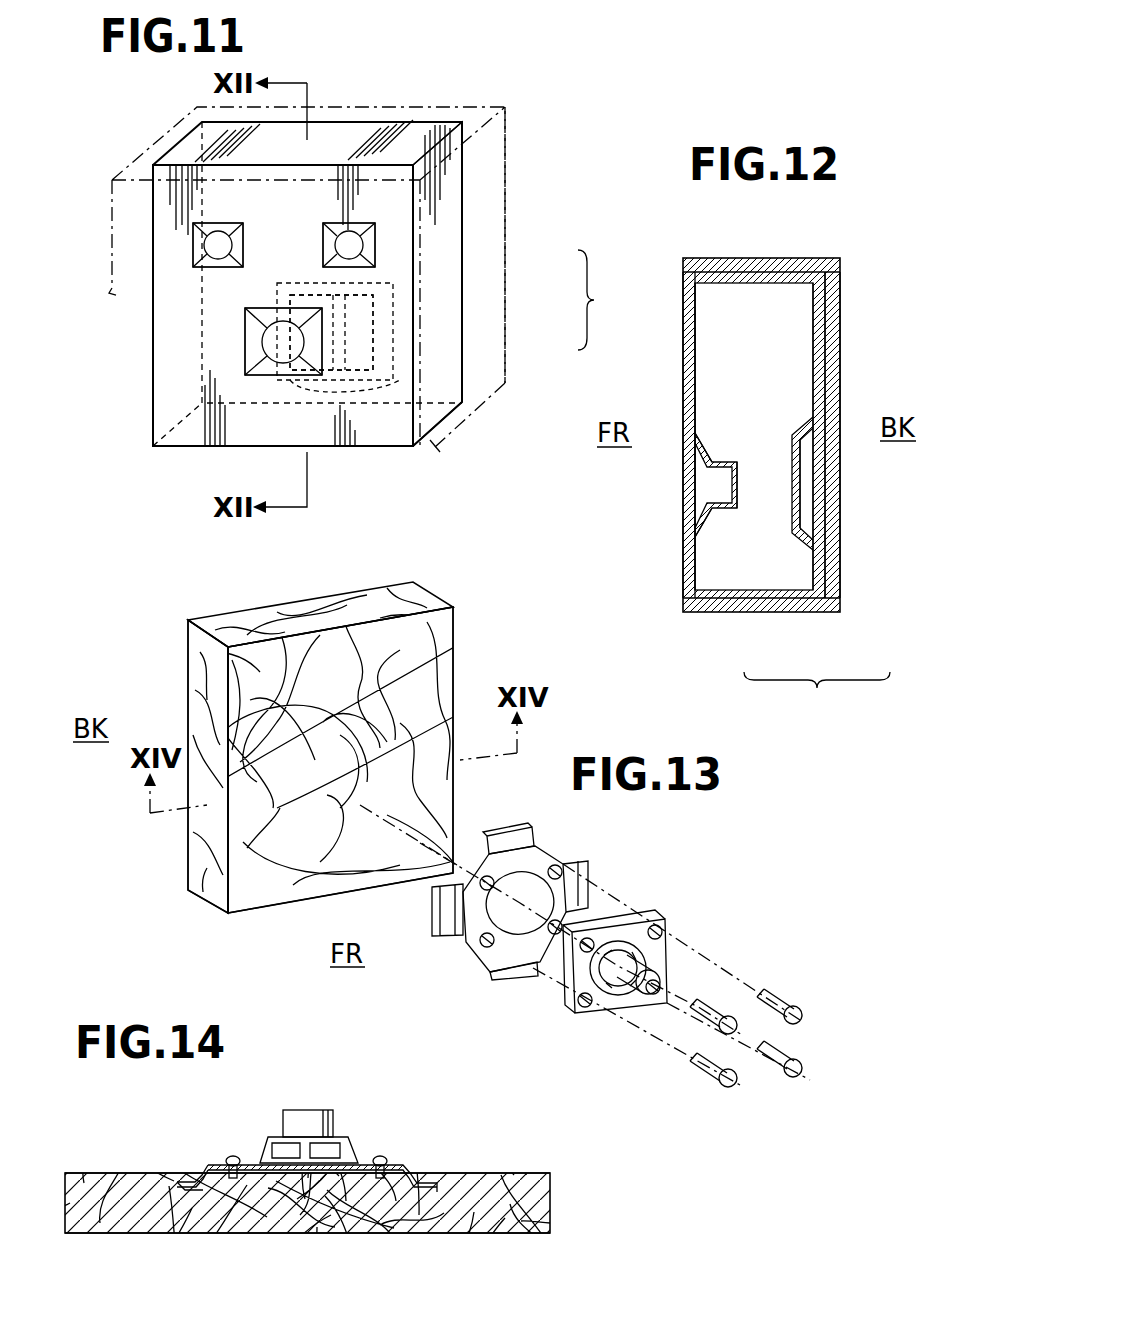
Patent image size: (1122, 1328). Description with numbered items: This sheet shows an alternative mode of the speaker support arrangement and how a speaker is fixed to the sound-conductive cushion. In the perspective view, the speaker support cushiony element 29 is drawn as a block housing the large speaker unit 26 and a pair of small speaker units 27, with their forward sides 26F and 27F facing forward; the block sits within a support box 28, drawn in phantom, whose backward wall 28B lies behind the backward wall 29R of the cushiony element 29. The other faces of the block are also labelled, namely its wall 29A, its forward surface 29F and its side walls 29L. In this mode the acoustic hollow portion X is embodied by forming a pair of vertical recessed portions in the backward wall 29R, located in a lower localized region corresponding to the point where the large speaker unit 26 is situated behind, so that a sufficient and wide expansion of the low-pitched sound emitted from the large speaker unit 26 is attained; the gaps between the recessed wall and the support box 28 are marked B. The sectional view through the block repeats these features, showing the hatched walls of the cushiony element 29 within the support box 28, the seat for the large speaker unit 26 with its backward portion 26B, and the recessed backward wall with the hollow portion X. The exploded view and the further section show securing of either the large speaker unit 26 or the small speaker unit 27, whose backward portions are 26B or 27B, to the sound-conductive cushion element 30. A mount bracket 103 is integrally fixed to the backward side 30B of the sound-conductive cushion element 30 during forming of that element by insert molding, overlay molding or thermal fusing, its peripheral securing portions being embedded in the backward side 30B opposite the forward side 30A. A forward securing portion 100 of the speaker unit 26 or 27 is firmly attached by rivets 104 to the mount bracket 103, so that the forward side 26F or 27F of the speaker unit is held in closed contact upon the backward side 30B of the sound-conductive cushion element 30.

In FIG. 11, the large speaker unit 26 is at (252, 342).
In FIG. 12, the large speaker unit 26 is at (700, 462).
In FIG. 13, the large speaker unit 26 is at (590, 1008).
In FIG. 14, the large speaker unit 26 is at (309, 1108).
In FIG. 11, the small speaker unit 27 is at (197, 248).
In FIG. 13, the small speaker unit 27 is at (612, 975).
In FIG. 14, the small speaker unit 27 is at (310, 1110).
In FIG. 11, the forward side of large speaker unit 26F is at (252, 352).
In FIG. 12, the forward side of large speaker unit 26F is at (690, 520).
In FIG. 13, the forward side of large speaker unit 26F is at (702, 932).
In FIG. 11, the forward side of small speaker unit 27F is at (360, 223).
In FIG. 13, the forward side of small speaker unit 27F is at (607, 952).
In FIG. 12, the connector back portion 26B is at (745, 475).
In FIG. 13, the connector back portion 26B is at (632, 1034).
In FIG. 13, the connector back portion 27B is at (640, 985).
In FIG. 11, the support box 28 is at (515, 129).
In FIG. 12, the support box 28 is at (848, 270).
In FIG. 11, the outer case back wall 28B is at (488, 192).
In FIG. 12, the outer case back wall 28B is at (840, 475).
In FIG. 11, the speaker support cushiony element 29 is at (378, 125).
In FIG. 12, the speaker support cushiony element 29 is at (775, 262).
In FIG. 11, the inner case front wall 29A is at (163, 210).
In FIG. 11, the inner case front surface 29F is at (192, 432).
In FIG. 12, the inner case front surface 29F is at (683, 380).
In FIG. 11, the inner case side wall 29L is at (153, 412).
In FIG. 11, the backward wall of speaker support cushiony element 29R is at (458, 168).
In FIG. 12, the backward wall of speaker support cushiony element 29R is at (817, 323).
In FIG. 11, the gap B is at (393, 283).
In FIG. 12, the gap B is at (808, 510).
In FIG. 11, the acoustic hollow portion X is at (596, 300).
In FIG. 12, the acoustic hollow portion X is at (817, 696).
In FIG. 13, the sound-conductive cushion element 30 is at (455, 592).
In FIG. 14, the sound-conductive cushion element 30 is at (110, 1165).
In FIG. 13, the block rear face 30A is at (193, 683).
In FIG. 14, the block rear face 30A is at (297, 1233).
In FIG. 13, the backward side of sound-conductive cushion element 30B is at (393, 658).
In FIG. 14, the backward side of sound-conductive cushion element 30B is at (512, 1172).
In FIG. 13, the forward securing portion 100 is at (643, 917).
In FIG. 14, the forward securing portion 100 is at (403, 1167).
In FIG. 13, the mount bracket 103 is at (452, 933).
In FIG. 14, the mount bracket 103 is at (207, 1167).
In FIG. 13, the rivets 104 is at (783, 990).
In FIG. 14, the rivets 104 is at (233, 1156).